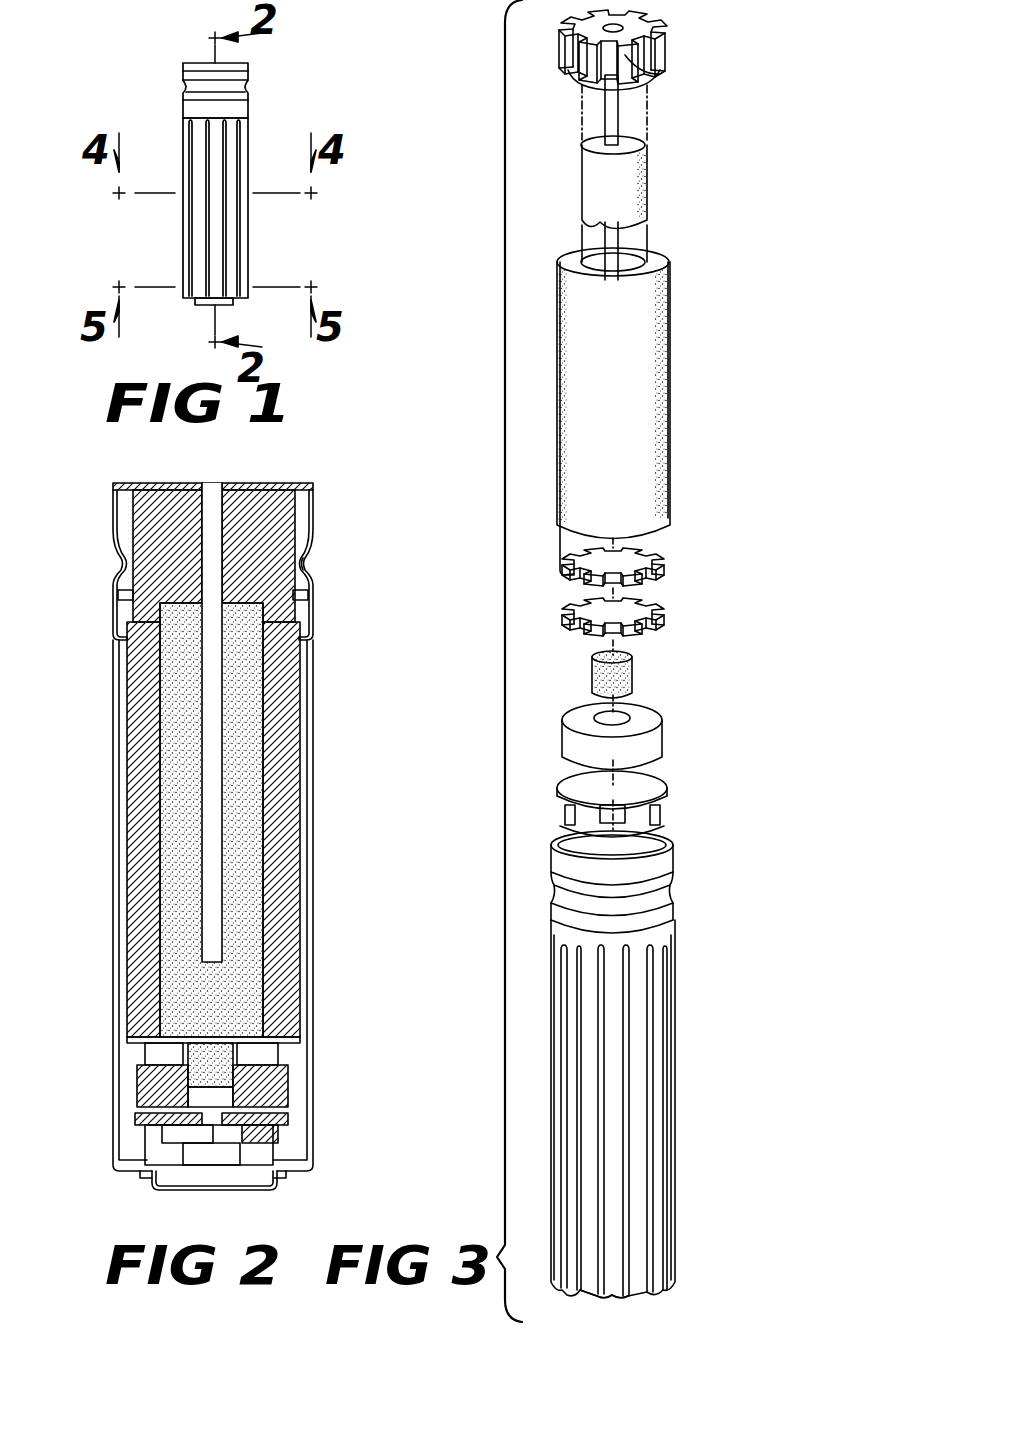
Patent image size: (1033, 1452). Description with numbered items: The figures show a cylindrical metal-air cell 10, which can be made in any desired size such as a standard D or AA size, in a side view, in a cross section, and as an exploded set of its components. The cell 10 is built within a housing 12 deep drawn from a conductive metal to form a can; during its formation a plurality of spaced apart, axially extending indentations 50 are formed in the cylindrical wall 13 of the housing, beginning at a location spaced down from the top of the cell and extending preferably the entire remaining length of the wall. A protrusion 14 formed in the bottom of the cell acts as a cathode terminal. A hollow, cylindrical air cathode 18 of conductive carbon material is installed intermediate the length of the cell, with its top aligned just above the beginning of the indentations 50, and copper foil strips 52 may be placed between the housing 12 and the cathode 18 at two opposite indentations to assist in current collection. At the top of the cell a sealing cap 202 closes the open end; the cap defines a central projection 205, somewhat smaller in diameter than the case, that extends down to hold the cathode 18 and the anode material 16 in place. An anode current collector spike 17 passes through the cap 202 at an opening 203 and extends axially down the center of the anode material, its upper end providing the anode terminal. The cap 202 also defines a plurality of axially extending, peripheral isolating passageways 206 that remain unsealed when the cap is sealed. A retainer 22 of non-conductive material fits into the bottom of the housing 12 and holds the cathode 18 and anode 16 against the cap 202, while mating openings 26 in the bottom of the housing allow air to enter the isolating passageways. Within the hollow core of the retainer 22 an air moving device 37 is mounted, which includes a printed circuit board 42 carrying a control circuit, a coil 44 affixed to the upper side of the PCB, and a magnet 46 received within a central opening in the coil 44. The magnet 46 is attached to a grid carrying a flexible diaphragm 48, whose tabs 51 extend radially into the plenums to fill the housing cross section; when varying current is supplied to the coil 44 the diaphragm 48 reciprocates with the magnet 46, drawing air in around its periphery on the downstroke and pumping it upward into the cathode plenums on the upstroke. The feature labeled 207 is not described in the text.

In FIG. 1, the cylindrical metal-air cell 10 is at (199, 165).
In FIG. 2, the cylindrical metal-air cell 10 is at (208, 839).
In FIG. 3, the cylindrical metal-air cell 10 is at (640, 657).
In FIG. 1, the housing 12 is at (248, 138).
In FIG. 2, the housing 12 is at (310, 990).
In FIG. 3, the housing 12 is at (651, 1064).
In FIG. 3, the cylindrical wall 13 is at (668, 922).
In FIG. 2, the protrusion 14 is at (198, 1192).
In FIG. 2, the anode material 16 is at (245, 800).
In FIG. 3, the anode material 16 is at (635, 173).
In FIG. 2, the anode current collector spike 17 is at (210, 893).
In FIG. 3, the anode current collector spike 17 is at (615, 240).
In FIG. 2, the air cathode 18 is at (280, 697).
In FIG. 3, the air cathode 18 is at (655, 318).
In FIG. 2, the retainer 22 is at (138, 1140).
In FIG. 2, the openings 26 is at (145, 1174).
In FIG. 2, the air moving device 37 is at (205, 1042).
In FIG. 3, the air moving device 37 is at (622, 660).
In FIG. 2, the printed circuit board 42 is at (283, 1135).
In FIG. 3, the printed circuit board 42 is at (658, 786).
In FIG. 2, the coil 44 is at (140, 1090).
In FIG. 3, the coil 44 is at (663, 733).
In FIG. 2, the magnet 46 is at (210, 1040).
In FIG. 3, the magnet 46 is at (635, 668).
In FIG. 2, the diaphragm 48 is at (130, 1040).
In FIG. 3, the diaphragm 48 is at (658, 556).
In FIG. 3, the indentations 50 is at (615, 1292).
In FIG. 3, the tabs 51 is at (658, 605).
In FIG. 3, the copper foil strips 52 is at (668, 410).
In FIG. 2, the sealing cap 202 is at (258, 483).
In FIG. 3, the sealing cap 202 is at (672, 15).
In FIG. 2, the opening 203 is at (202, 483).
In FIG. 2, the central projection 205 is at (118, 600).
In FIG. 3, the central projection 205 is at (566, 78).
In FIG. 2, the isolating passageways 206 is at (120, 513).
In FIG. 3, the isolating passageways 206 is at (634, 68).
In FIG. 2, the skirt groove 207 is at (312, 562).